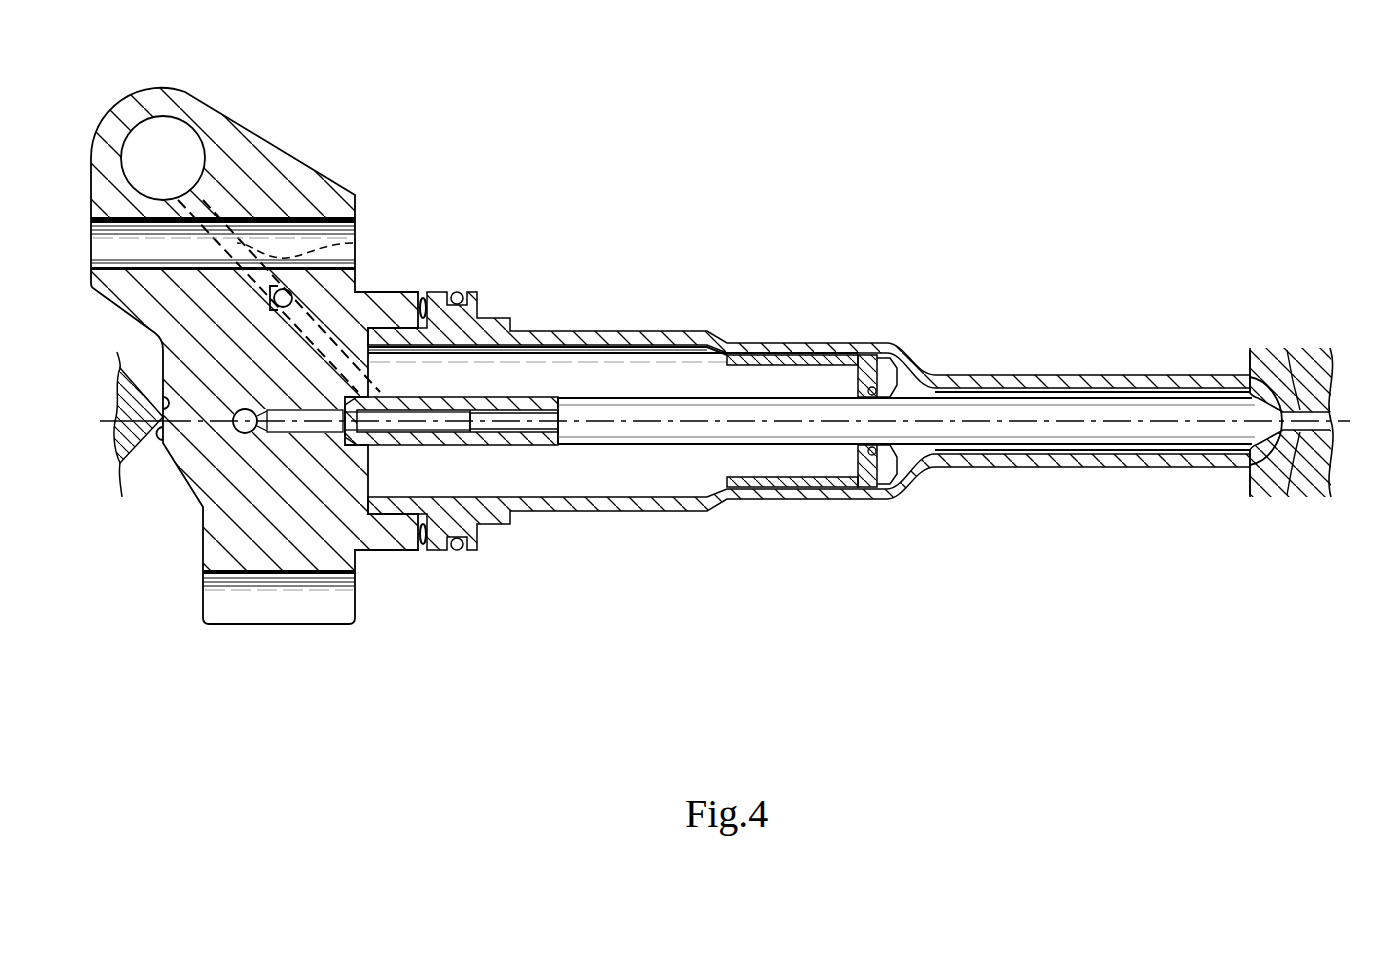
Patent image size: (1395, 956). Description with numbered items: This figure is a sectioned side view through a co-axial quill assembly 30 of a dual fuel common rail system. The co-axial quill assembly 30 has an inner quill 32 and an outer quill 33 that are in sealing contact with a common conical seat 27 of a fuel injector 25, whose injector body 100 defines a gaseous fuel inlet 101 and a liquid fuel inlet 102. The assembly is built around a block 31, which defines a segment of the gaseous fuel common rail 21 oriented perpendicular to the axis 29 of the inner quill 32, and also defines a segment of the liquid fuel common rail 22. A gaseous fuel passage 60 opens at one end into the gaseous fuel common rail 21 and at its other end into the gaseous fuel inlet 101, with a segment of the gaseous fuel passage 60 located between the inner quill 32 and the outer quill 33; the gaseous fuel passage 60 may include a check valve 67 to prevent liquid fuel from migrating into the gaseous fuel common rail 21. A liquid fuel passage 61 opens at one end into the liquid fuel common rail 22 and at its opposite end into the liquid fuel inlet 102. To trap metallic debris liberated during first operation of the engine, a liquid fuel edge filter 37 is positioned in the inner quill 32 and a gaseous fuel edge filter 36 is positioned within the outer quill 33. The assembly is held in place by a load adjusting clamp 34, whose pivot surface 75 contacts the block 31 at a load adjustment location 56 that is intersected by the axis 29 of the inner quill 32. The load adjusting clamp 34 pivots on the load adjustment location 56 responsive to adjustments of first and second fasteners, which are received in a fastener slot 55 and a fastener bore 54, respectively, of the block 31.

The gaseous fuel common rail 21 is at (125, 148).
The liquid fuel common rail 22 is at (240, 432).
The fuel injector 25 is at (1250, 488).
The common conical seat 27 is at (1247, 380).
The axis 29 is at (1163, 418).
The co-axial quill assembly 30 is at (748, 268).
The block 31 is at (262, 135).
The inner quill 32 is at (1078, 398).
The outer quill 33 is at (940, 468).
The load adjusting clamp 34 is at (122, 478).
The gaseous fuel edge filter 36 is at (800, 358).
The liquid fuel edge filter 37 is at (424, 410).
The fastener bore 54 is at (127, 262).
The fastener slot 55 is at (282, 592).
The load adjustment location 56 is at (164, 441).
The gaseous fuel passage 60 is at (353, 243).
The liquid fuel passage 61 is at (326, 428).
The check valve 67 is at (290, 290).
The pivot surface 75 is at (166, 398).
The injector body 100 is at (1320, 437).
The gaseous fuel inlet 101 is at (1284, 476).
The liquid fuel inlet 102 is at (1284, 372).